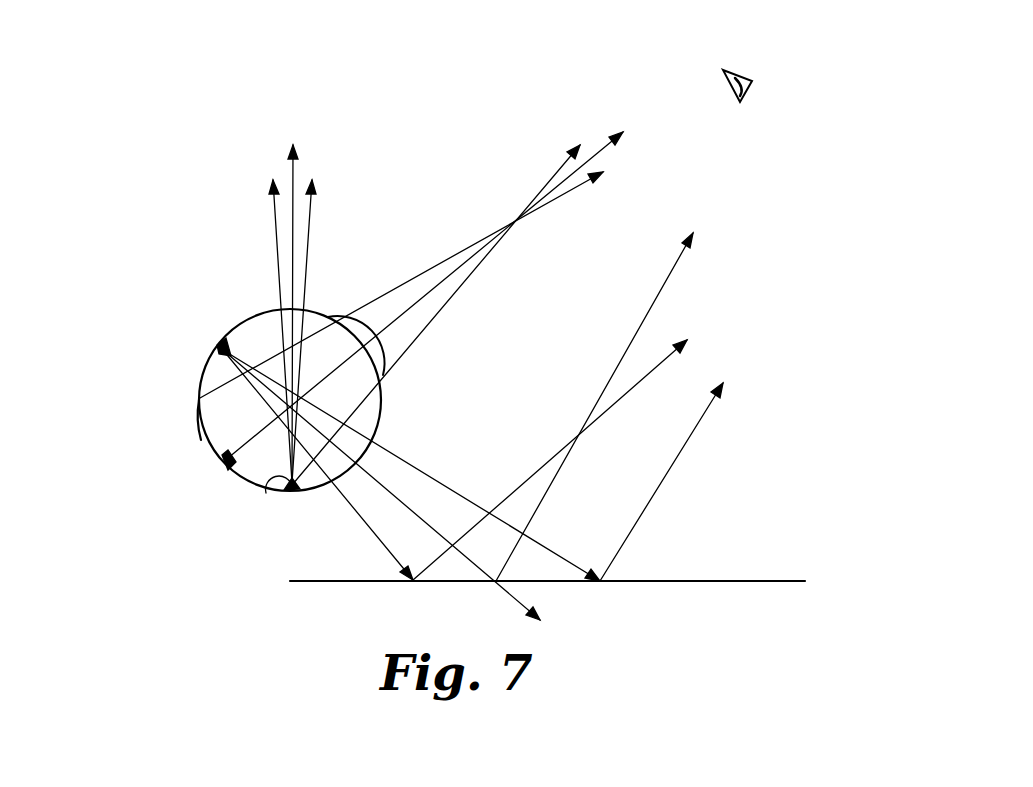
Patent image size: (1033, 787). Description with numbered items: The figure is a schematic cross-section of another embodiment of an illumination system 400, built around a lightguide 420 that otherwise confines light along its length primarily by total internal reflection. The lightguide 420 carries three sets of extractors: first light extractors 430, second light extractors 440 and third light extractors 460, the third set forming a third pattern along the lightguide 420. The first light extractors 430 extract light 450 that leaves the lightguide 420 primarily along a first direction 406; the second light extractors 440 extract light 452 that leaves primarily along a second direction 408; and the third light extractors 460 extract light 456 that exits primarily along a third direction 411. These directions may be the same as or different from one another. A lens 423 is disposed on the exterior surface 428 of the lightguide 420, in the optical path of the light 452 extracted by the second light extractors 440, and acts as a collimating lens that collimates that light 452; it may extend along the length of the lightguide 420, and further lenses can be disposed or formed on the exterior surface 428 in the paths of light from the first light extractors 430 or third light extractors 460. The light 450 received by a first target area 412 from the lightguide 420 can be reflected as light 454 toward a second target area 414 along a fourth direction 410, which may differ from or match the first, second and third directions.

The illumination system 400 is at (155, 208).
The first direction 406 is at (530, 610).
The second direction 408 is at (600, 150).
The fourth direction 410 is at (668, 273).
The third direction 411 is at (292, 176).
The first target area 412 is at (732, 581).
The second target area 414 is at (770, 95).
The lightguide 420 is at (220, 317).
The lens 423 is at (364, 326).
The exterior surface 428 is at (204, 422).
The first light extractors 430 is at (213, 345).
The second light extractors 440 is at (215, 463).
The light extracted by first light extractors 450 is at (423, 452).
The light extracted by second light extractors 452 is at (455, 292).
The reflected light 454 is at (677, 453).
The light extracted by third light extractors 456 is at (313, 215).
The third light extractors 460 is at (270, 488).